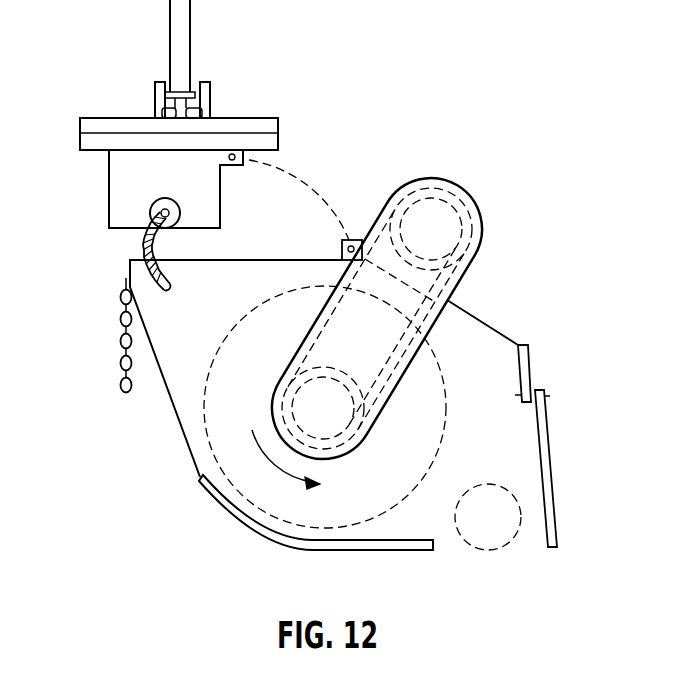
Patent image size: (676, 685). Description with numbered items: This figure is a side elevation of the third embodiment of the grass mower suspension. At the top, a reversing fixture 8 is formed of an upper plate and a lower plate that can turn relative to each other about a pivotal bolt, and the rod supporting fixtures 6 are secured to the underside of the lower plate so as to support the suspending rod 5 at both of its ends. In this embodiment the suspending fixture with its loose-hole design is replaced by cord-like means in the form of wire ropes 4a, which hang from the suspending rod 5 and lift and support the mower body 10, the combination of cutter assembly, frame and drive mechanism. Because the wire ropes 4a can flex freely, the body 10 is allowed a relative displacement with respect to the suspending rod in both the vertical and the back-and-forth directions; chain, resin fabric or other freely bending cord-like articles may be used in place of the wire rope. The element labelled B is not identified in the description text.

The rod / boom B is at (190, 36).
The reversing fixture 8 is at (250, 118).
The rod supporting fixture 6 is at (133, 162).
The suspending rod 5 is at (150, 208).
The wire rope 4a is at (143, 241).
The body 10 is at (500, 306).